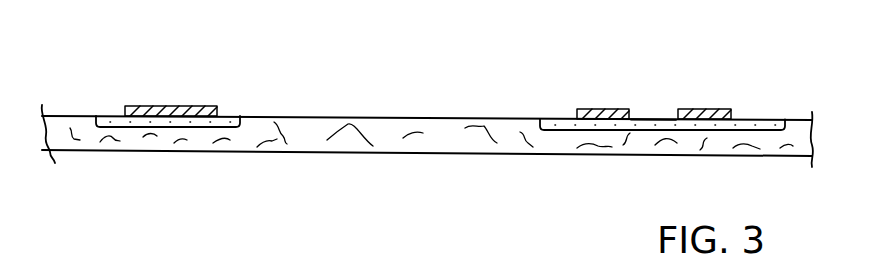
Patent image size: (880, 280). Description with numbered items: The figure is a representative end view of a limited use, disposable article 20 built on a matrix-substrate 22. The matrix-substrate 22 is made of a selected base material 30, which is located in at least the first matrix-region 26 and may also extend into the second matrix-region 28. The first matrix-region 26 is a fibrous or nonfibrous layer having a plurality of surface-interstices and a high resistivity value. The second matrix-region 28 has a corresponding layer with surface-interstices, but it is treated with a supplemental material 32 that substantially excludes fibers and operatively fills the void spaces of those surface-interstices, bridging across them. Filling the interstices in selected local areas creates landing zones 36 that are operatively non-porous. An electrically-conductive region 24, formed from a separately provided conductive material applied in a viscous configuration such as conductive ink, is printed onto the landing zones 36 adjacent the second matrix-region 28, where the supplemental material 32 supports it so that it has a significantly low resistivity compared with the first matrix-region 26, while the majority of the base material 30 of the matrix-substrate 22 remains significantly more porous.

The disposable article 20 is at (415, 112).
The matrix-substrate 22 is at (85, 152).
The electrically-conductive region 24 is at (178, 106).
The first matrix-region 26 is at (336, 100).
The second matrix-region 28 is at (655, 103).
The base material 30 is at (200, 143).
The supplemental material 32 is at (110, 116).
The landing zones 36 is at (224, 114).